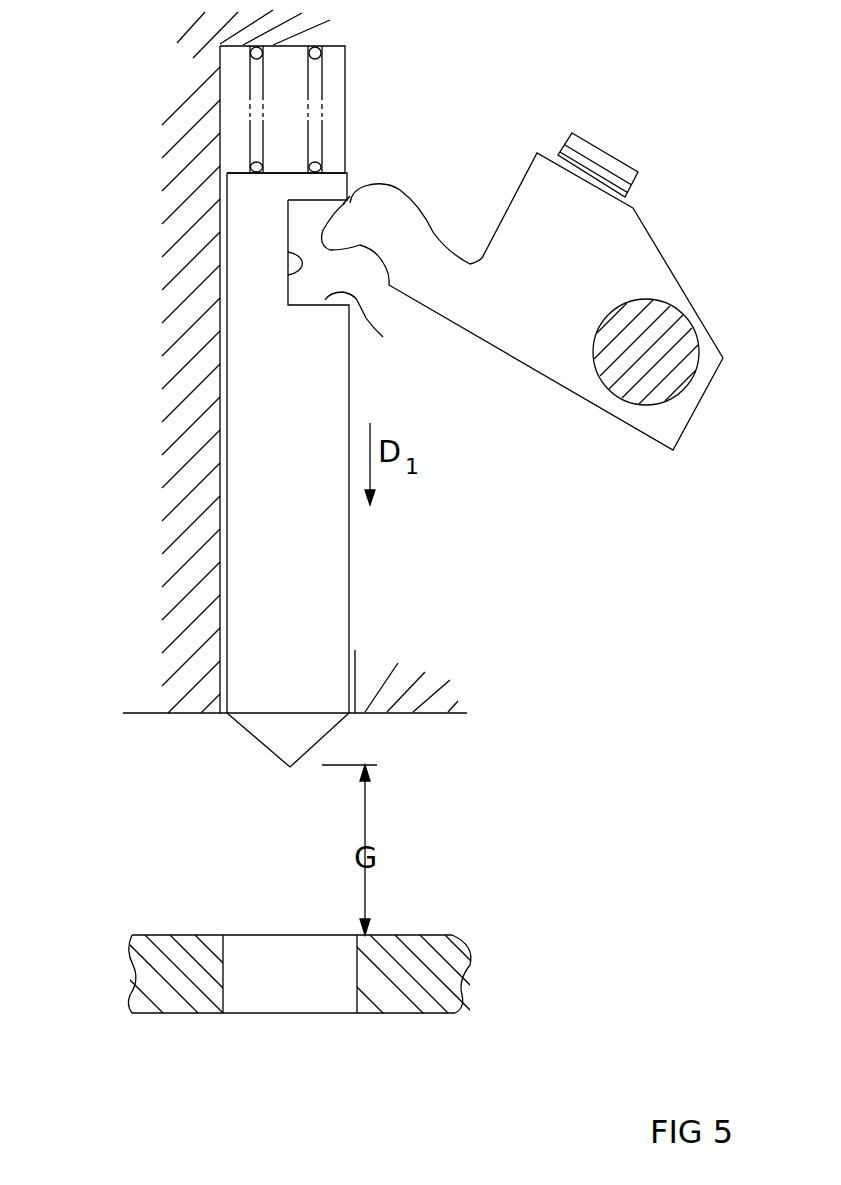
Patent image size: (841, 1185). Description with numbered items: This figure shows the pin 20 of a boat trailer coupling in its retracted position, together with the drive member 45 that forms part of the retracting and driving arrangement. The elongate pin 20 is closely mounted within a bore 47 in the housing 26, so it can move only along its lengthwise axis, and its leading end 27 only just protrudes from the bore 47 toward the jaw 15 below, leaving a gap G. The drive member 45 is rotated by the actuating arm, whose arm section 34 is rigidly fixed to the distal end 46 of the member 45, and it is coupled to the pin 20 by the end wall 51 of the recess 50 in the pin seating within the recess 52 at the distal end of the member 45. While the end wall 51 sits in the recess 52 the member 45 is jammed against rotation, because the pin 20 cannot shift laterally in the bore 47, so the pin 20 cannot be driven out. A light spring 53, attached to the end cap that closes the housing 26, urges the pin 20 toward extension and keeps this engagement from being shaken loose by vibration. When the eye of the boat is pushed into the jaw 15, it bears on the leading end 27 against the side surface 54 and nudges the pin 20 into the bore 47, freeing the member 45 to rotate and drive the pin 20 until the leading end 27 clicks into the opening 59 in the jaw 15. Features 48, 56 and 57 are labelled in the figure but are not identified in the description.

The jaw 15 is at (311, 981).
The pin 20 is at (310, 553).
The housing 26 is at (182, 452).
The leading end 27 is at (280, 736).
The arm section 34 is at (655, 370).
The drive member 45 is at (554, 271).
The distal end 46 is at (695, 302).
The bore 47 is at (217, 120).
The base surface 48 is at (153, 713).
The recess 50 is at (290, 274).
The end wall 51 is at (347, 190).
The recess 52 is at (343, 198).
The spring 53 is at (318, 67).
The side surface 54 is at (330, 735).
The stop block 56 is at (595, 165).
The hook 57 is at (381, 326).
The opening 59 is at (308, 983).